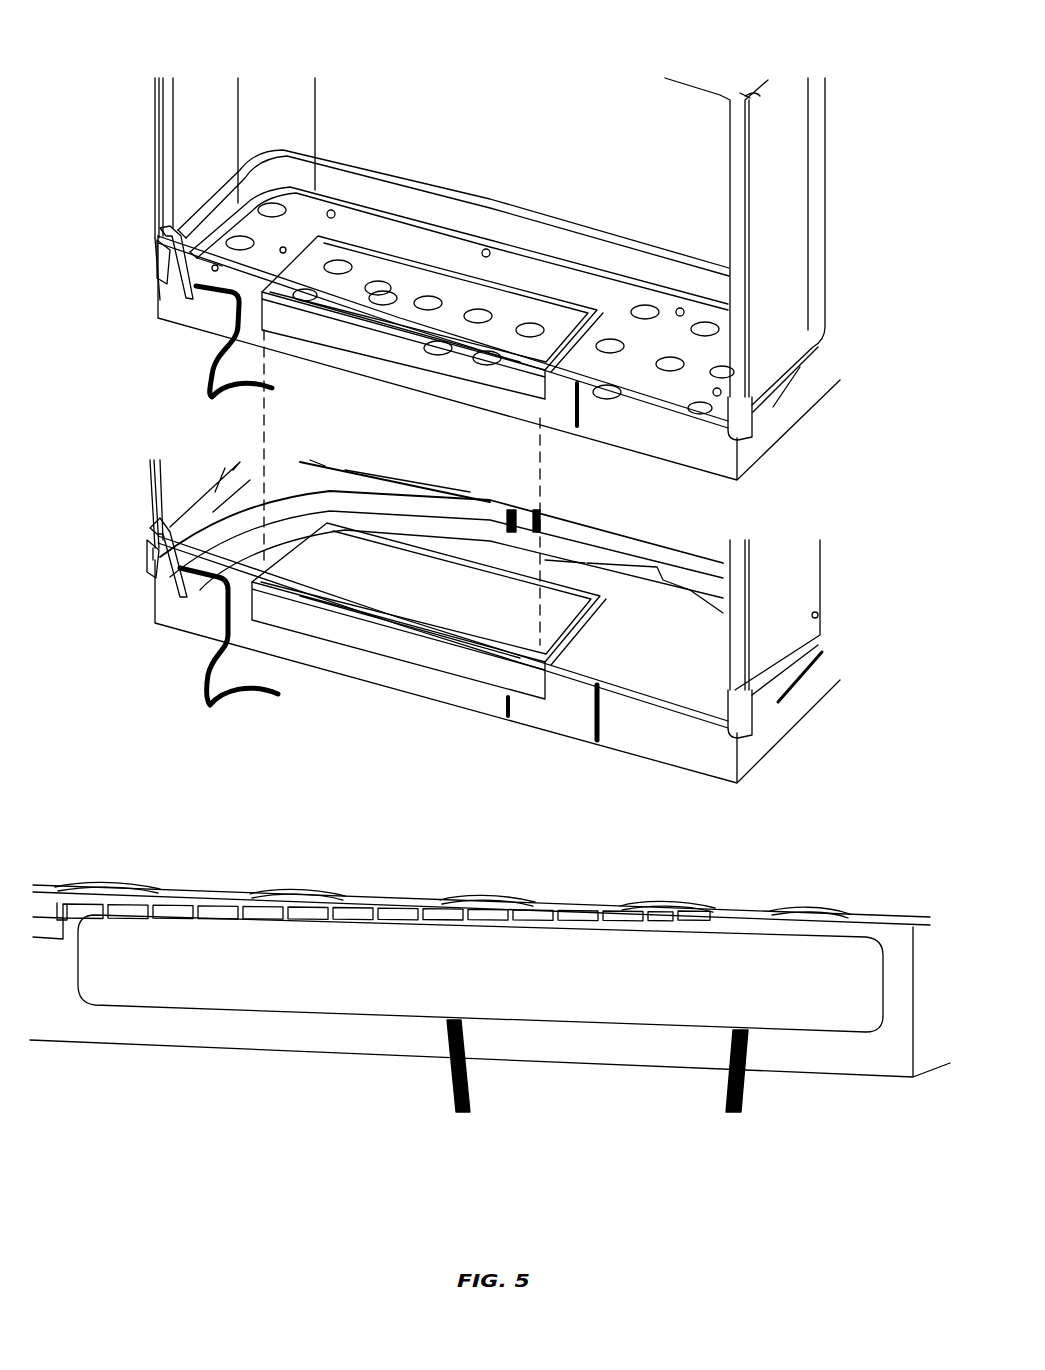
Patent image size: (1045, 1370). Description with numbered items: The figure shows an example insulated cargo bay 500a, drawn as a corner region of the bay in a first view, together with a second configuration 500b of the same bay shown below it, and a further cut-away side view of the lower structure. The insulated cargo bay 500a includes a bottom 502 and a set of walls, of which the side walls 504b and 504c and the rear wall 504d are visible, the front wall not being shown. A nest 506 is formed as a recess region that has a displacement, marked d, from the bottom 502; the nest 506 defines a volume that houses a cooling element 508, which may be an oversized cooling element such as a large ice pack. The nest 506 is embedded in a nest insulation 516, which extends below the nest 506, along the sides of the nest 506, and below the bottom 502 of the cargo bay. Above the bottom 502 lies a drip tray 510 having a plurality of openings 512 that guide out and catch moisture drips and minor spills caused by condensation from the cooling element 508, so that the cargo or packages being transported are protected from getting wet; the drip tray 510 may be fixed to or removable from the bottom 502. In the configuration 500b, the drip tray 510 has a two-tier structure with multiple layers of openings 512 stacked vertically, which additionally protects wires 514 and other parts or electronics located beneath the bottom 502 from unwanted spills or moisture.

The insulated cargo bay 500a is at (145, 82).
The configuration 500b is at (110, 745).
The bottom 502 is at (660, 686).
The side wall 504b is at (156, 165).
The side wall 504c is at (795, 278).
The rear wall 504d is at (397, 140).
The nest 506 is at (520, 400).
The cooling element 508 is at (380, 352).
The drip tray 510 is at (698, 402).
The opening 512 is at (372, 288).
The wire 514 is at (210, 386).
The nest insulation 516 is at (793, 413).